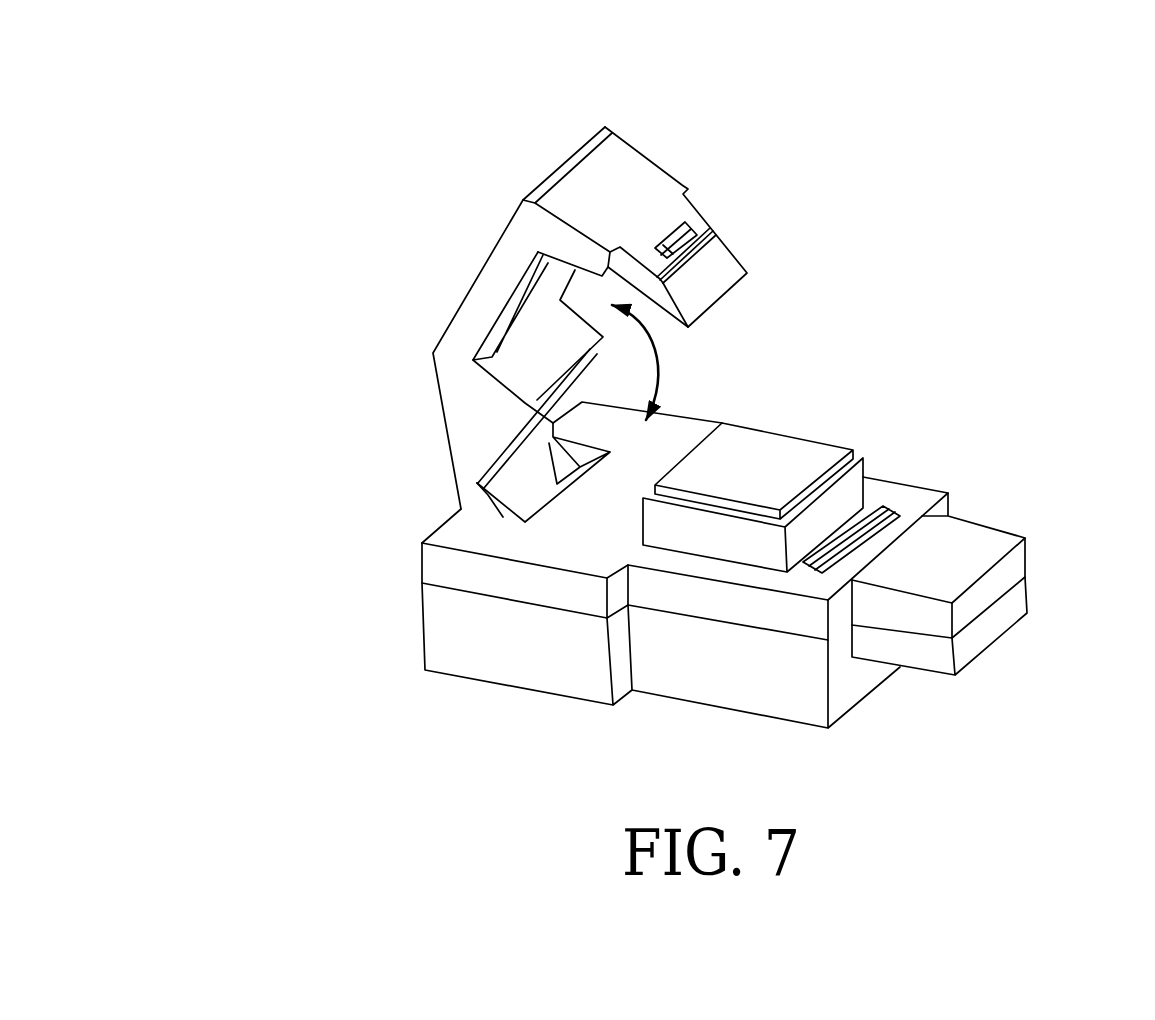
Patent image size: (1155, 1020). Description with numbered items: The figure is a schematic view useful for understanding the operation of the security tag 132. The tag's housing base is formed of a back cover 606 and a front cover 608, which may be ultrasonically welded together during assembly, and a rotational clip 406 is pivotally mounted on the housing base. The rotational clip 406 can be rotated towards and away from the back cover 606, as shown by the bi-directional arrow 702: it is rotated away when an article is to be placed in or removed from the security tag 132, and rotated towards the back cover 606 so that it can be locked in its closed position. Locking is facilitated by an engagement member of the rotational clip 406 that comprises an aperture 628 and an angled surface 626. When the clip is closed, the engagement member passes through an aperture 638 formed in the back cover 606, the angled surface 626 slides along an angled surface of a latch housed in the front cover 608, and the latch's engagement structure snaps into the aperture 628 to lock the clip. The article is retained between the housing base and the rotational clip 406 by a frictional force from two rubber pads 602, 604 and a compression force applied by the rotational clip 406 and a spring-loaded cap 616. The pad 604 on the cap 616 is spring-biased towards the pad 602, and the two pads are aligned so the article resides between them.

The security tag 132 is at (407, 124).
The rotational clip 406 is at (672, 152).
The pad 602 is at (522, 287).
The pad 604 is at (818, 442).
The back cover 606 is at (1090, 518).
The front cover 608 is at (925, 677).
The cap 616 is at (673, 535).
The angled surface 626 is at (833, 328).
The aperture 628 is at (678, 242).
The aperture 638 is at (1022, 421).
The bi-directional arrow 702 is at (697, 367).